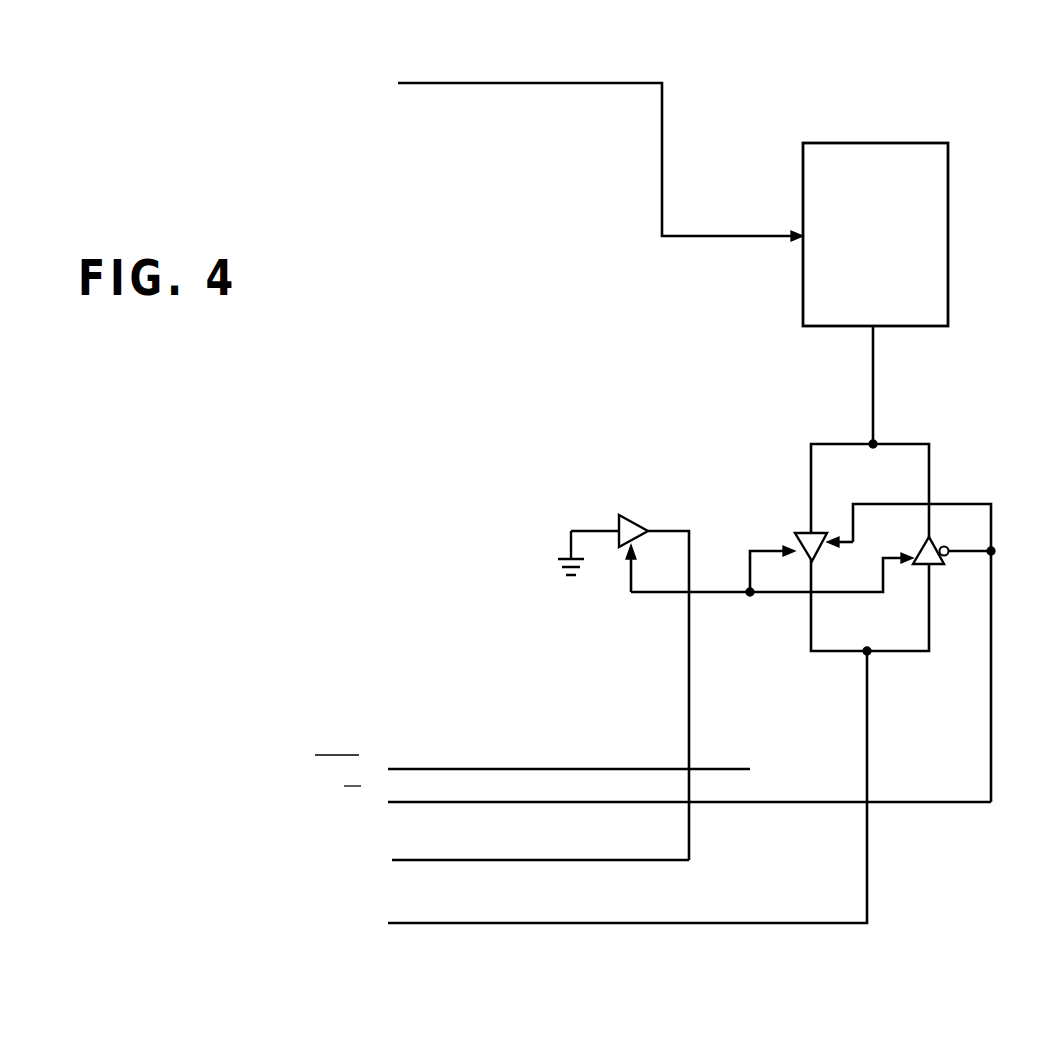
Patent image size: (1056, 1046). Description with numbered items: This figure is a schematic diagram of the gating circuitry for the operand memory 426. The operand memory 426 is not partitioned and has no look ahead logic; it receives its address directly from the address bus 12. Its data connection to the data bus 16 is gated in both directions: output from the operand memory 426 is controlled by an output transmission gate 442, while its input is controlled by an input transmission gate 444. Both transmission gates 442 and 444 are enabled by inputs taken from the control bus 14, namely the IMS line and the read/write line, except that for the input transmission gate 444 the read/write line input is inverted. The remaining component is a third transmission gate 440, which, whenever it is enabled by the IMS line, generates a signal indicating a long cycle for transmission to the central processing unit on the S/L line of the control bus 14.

The address bus 12 is at (568, 82).
The control bus 14 is at (296, 875).
The data bus 16 is at (613, 923).
The operand memory 426 is at (948, 290).
The third transmission gate 440 is at (625, 516).
The output transmission gate 442 is at (806, 533).
The input transmission gate 444 is at (937, 565).